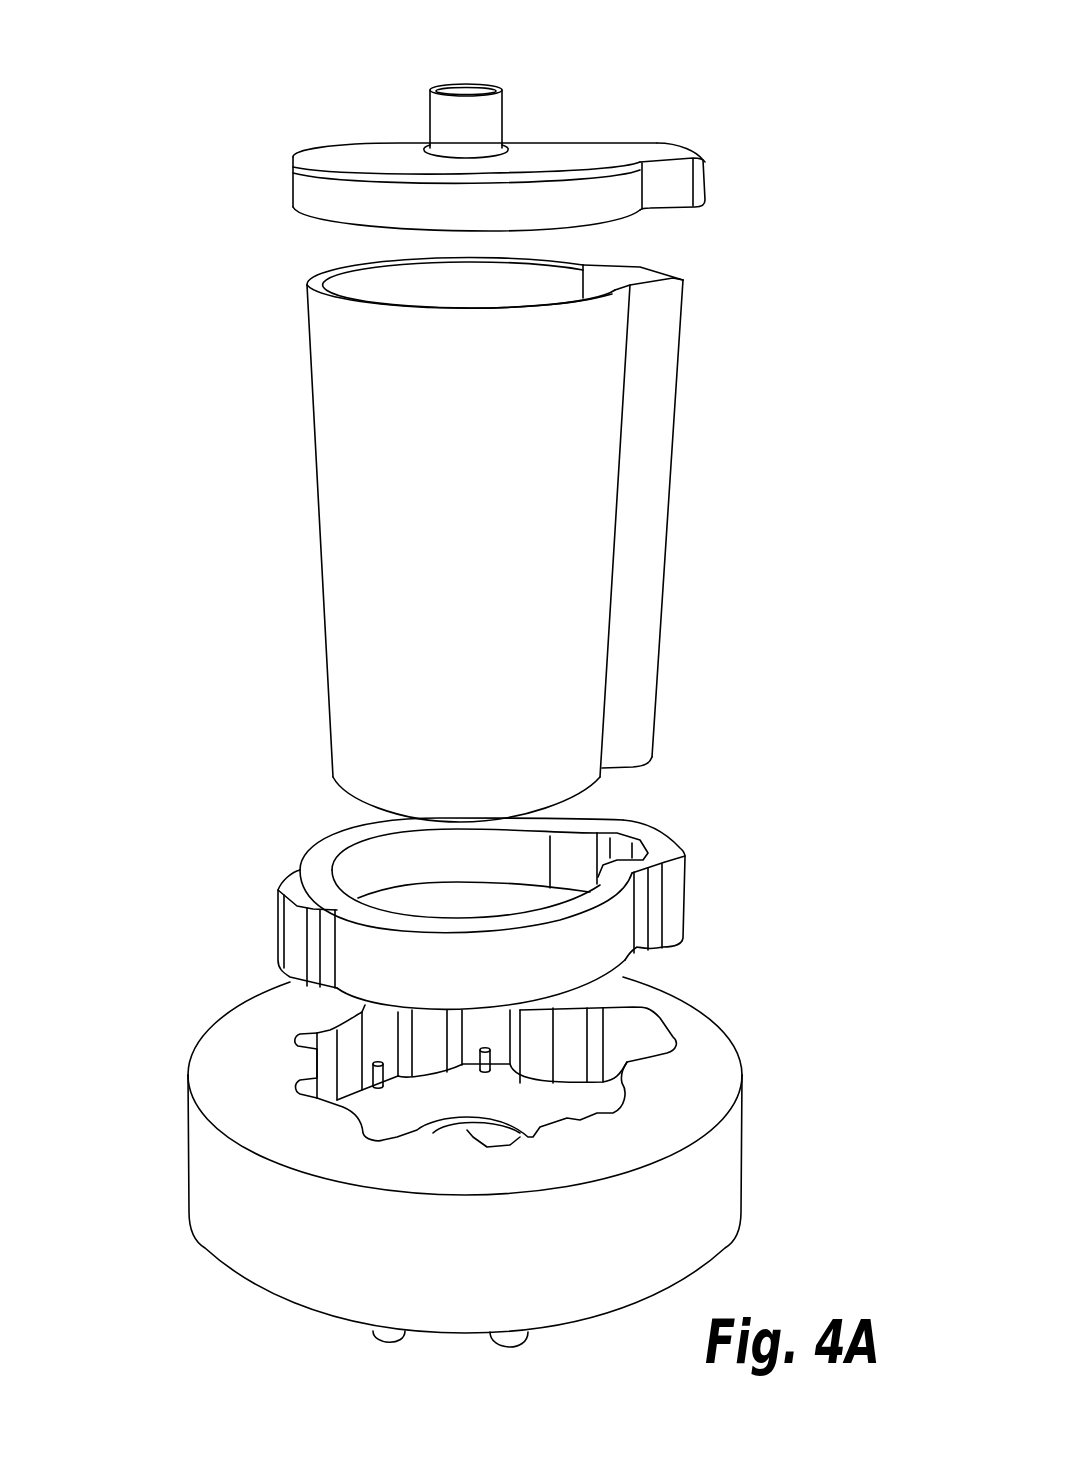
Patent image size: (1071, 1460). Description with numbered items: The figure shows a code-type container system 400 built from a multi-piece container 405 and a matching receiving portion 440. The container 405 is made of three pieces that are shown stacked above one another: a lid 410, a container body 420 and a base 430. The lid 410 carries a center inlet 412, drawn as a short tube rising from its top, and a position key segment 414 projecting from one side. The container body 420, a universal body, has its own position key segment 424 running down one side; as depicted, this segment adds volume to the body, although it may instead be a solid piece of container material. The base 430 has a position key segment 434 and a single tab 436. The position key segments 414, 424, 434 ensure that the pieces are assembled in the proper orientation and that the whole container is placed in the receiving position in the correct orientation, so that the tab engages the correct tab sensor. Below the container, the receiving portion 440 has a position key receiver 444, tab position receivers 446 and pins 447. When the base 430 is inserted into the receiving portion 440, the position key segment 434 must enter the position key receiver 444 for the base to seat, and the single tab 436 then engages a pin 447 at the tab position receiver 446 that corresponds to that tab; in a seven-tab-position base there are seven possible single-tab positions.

The code-type container system 400 is at (638, 101).
The container 405 is at (267, 138).
The lid 410 is at (283, 189).
The center inlet 412 is at (465, 74).
The position key segment 414 is at (717, 178).
The container body 420 is at (314, 384).
The position key segment 424 is at (685, 428).
The base 430 is at (290, 852).
The position key segment 434 is at (697, 887).
The tab 436 is at (272, 936).
The receiving portion 440 is at (180, 1132).
The position key receiver 444 is at (677, 1058).
The tab position receivers 446 is at (292, 1083).
The pins 447 is at (370, 1087).